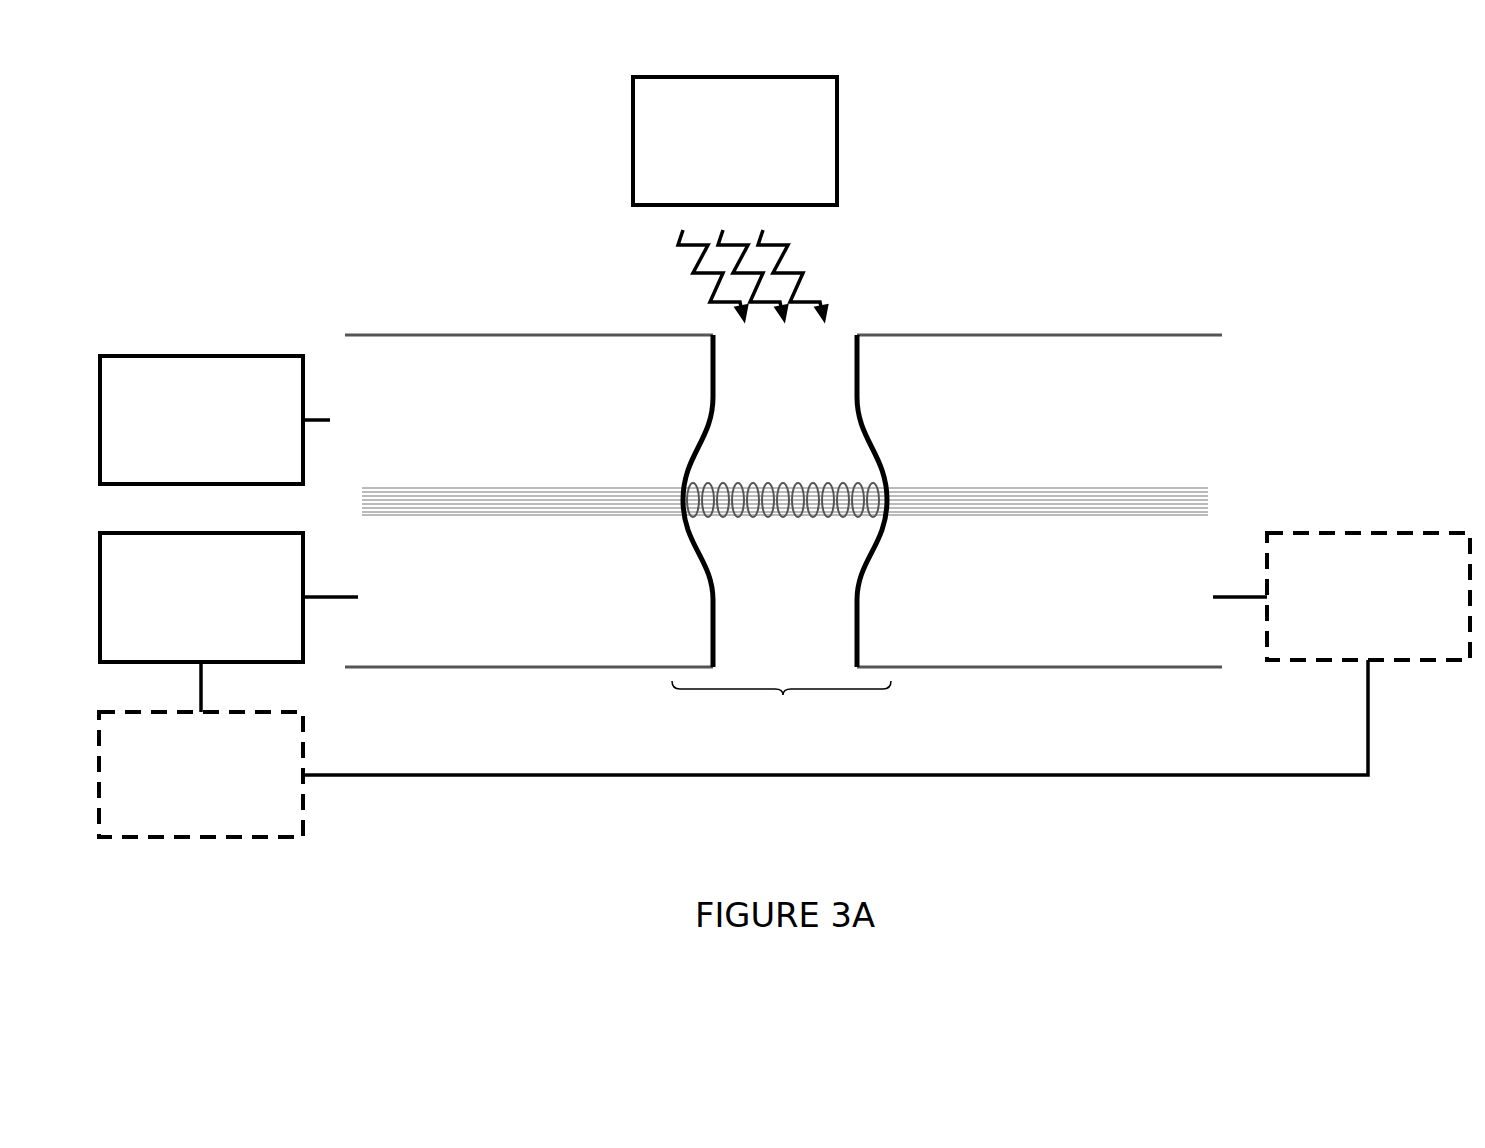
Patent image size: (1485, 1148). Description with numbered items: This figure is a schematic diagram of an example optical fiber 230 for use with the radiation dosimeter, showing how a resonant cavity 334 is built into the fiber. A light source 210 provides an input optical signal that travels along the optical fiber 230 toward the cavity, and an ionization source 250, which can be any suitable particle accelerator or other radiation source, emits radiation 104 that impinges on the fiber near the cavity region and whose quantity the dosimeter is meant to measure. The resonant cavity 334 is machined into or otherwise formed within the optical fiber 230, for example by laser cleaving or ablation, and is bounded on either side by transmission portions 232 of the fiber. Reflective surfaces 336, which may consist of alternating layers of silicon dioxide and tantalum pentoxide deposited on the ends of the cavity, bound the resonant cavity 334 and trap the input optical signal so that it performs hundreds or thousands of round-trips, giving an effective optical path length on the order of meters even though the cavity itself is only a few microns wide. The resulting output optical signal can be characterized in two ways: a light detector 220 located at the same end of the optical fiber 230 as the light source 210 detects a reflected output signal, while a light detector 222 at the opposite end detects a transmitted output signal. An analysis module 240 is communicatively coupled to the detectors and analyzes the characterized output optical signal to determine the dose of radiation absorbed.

The ionization source 250 is at (757, 193).
The radiation 104 is at (840, 284).
The transmission portions 232 is at (537, 358).
The optical fiber 230 is at (990, 300).
The reflective surfaces 336 is at (719, 563).
The resonant cavity 334 is at (781, 711).
The light source 210 is at (225, 455).
The light detector 220 is at (225, 633).
The light detector 222 is at (1343, 632).
The analysis module 240 is at (225, 827).